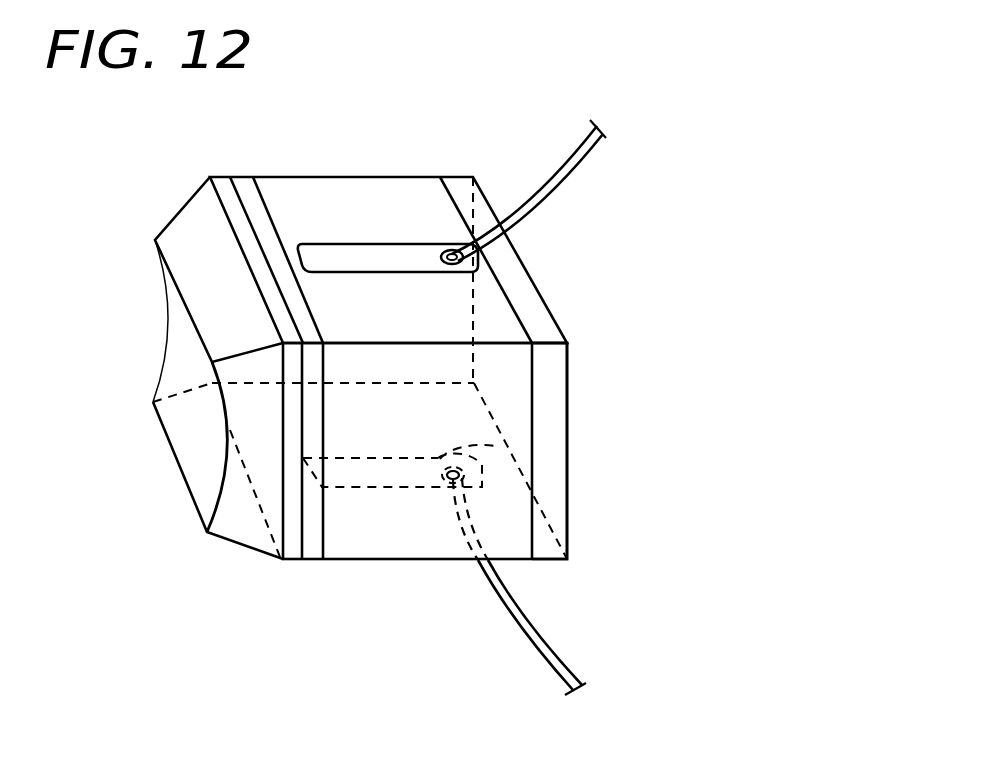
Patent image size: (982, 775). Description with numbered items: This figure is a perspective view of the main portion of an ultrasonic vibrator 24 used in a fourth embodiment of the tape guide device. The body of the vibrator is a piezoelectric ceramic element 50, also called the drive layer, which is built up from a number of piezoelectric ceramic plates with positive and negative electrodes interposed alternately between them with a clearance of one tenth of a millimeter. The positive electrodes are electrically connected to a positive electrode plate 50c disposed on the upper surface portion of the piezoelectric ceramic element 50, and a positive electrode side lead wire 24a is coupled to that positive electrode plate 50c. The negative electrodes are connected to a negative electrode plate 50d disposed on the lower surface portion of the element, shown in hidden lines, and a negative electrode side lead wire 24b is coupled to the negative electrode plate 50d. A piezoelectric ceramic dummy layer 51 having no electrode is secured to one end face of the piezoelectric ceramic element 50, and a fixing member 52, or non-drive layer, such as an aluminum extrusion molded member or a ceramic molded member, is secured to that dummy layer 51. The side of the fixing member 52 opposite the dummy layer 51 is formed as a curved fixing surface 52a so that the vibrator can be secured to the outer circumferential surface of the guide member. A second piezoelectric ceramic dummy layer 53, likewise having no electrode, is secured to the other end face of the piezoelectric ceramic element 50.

The ultrasonic vibrator 24 is at (556, 292).
The positive electrode side lead wire 24a is at (567, 142).
The negative electrode side lead wire 24b is at (530, 643).
The piezoelectric ceramic element 50 is at (512, 383).
The positive electrode plate 50c is at (368, 257).
The negative electrode plate 50d is at (500, 447).
The piezoelectric ceramic dummy layer 51 is at (312, 532).
The fixing member 52 is at (238, 548).
The curved fixing surface 52a is at (198, 450).
The piezoelectric ceramic dummy layer 53 is at (548, 500).